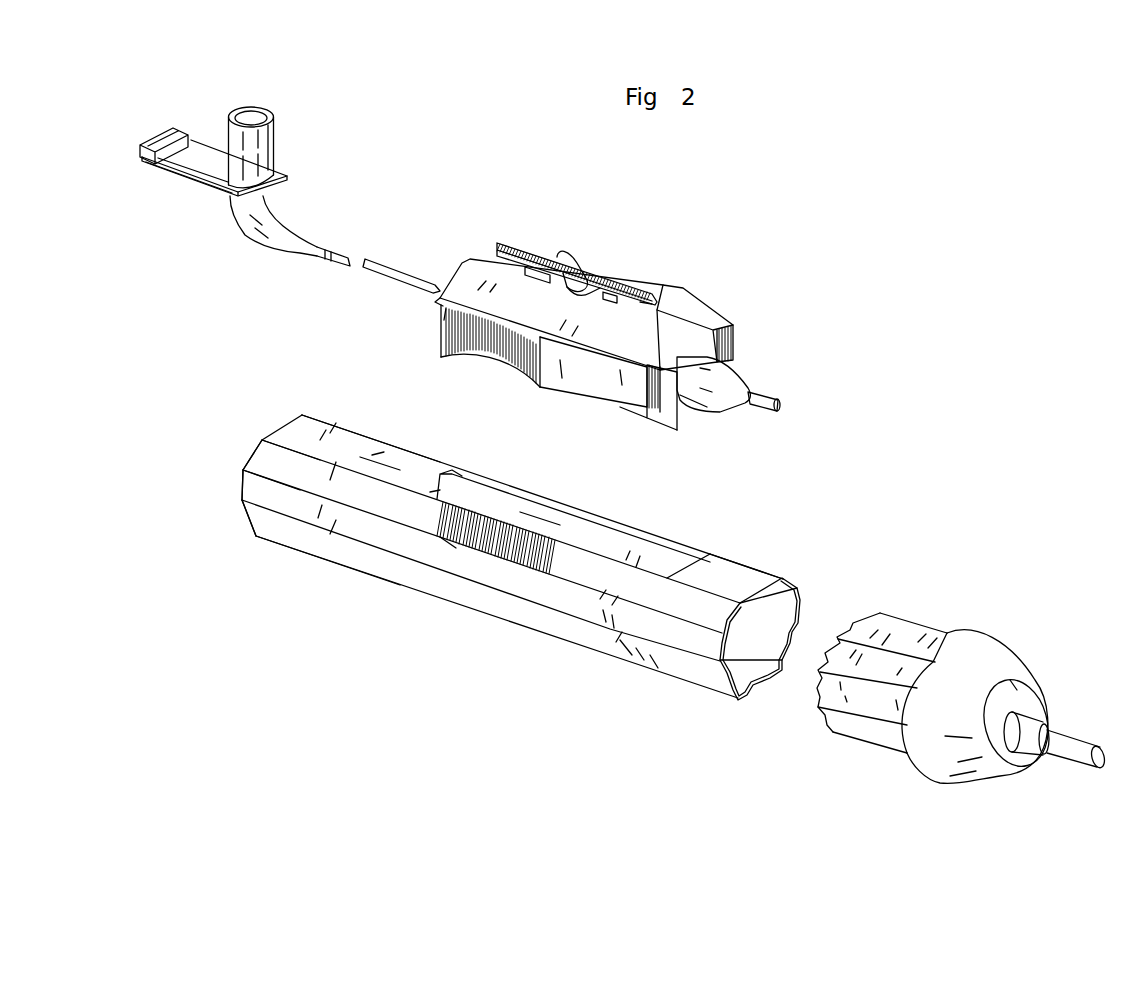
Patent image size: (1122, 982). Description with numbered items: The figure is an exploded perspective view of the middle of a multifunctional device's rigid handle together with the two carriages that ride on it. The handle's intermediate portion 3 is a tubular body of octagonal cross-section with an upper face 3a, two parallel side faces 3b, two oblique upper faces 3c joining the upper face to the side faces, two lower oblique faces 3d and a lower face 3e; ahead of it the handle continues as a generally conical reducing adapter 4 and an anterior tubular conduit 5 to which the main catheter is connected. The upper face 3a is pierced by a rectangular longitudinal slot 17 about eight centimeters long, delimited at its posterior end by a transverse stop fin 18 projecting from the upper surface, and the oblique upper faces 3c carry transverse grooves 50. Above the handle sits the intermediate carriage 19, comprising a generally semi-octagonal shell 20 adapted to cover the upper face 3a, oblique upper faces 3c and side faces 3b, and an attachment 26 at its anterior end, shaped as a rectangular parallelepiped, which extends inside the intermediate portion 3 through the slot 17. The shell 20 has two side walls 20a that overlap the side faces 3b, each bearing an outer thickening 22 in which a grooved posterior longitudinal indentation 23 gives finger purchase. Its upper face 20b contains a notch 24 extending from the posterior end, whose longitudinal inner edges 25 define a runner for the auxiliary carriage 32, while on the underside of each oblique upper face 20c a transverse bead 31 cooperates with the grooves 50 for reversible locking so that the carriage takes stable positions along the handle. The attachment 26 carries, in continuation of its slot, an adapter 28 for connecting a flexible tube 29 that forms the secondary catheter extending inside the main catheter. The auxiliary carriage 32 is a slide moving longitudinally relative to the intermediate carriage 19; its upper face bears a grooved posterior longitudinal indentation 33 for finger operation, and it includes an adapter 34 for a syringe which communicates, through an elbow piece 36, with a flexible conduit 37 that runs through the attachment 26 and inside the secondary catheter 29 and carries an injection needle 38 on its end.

The intermediate portion 3 is at (313, 582).
The upper face 3a is at (320, 425).
The side face 3b is at (245, 495).
The oblique upper face 3c is at (257, 455).
The lower oblique face 3d is at (672, 671).
The lower face 3e is at (760, 678).
The reducing adapter 4 is at (983, 662).
The anterior tubular conduit 5 is at (1073, 740).
The longitudinal slot 17 is at (563, 523).
The transverse stop fin 18 is at (463, 480).
The intermediate carriage 19 is at (615, 308).
The shell 20 is at (466, 283).
The side wall 20a is at (740, 332).
The upper face 20b is at (687, 307).
The oblique upper face 20c is at (432, 303).
The thickening 22 is at (587, 380).
The posterior longitudinal indentation 23 is at (485, 357).
The notch 24 is at (507, 267).
The longitudinal inner edges 25 is at (552, 253).
The attachment 26 is at (690, 417).
The adapter 28 is at (733, 373).
The flexible tube 29 is at (770, 395).
The transverse bead 31 is at (587, 287).
The auxiliary carriage 32 is at (254, 175).
The posterior longitudinal indentation 33 is at (190, 148).
The adapter 34 is at (273, 133).
The elbow piece 36 is at (243, 208).
The flexible conduit 37 is at (334, 225).
The injection needle 38 is at (393, 268).
The transverse grooves 50 is at (462, 540).